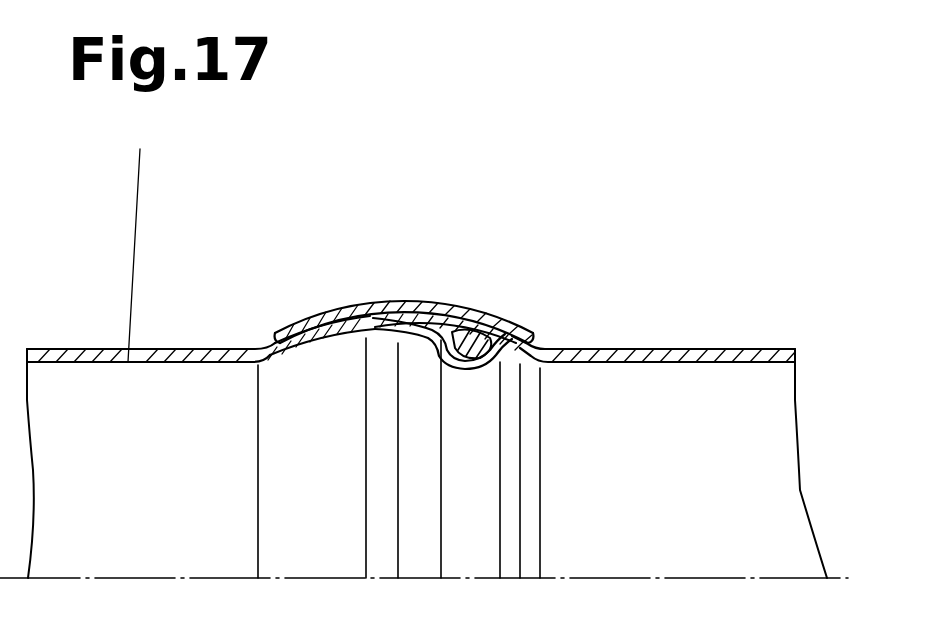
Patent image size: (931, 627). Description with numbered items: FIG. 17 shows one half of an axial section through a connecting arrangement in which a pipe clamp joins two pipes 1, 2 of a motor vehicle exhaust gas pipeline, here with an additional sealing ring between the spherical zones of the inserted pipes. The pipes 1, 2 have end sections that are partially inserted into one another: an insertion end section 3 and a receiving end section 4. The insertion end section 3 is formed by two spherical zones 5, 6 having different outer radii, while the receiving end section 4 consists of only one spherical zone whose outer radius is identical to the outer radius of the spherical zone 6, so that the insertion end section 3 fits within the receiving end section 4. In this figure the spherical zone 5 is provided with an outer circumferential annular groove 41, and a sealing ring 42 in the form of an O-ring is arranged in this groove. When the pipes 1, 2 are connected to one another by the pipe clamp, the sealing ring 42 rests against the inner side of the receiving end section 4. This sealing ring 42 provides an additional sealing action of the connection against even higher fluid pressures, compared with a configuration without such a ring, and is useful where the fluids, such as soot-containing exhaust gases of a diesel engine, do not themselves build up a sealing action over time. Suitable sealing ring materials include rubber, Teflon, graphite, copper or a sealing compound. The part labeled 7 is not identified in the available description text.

The pipe 1 is at (692, 338).
The pipe 2 is at (166, 340).
The insertion end section 3 is at (338, 296).
The receiving end section 4 is at (462, 325).
The annular groove 41 is at (492, 368).
The sealing ring 42 is at (508, 323).
The spherical zone 5 is at (421, 340).
The spherical zone 6 is at (329, 346).
The cover assembly 7 is at (428, 292).